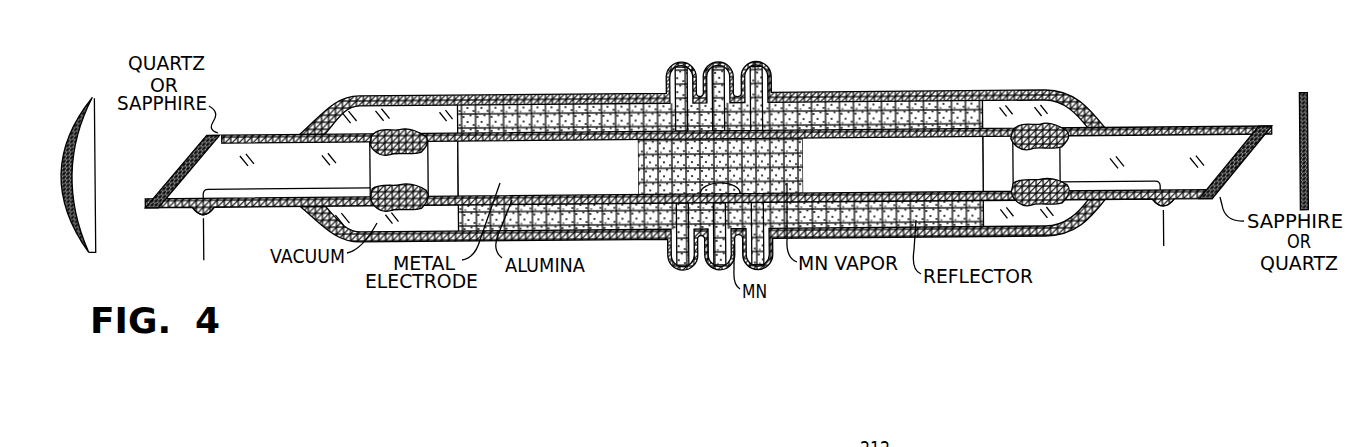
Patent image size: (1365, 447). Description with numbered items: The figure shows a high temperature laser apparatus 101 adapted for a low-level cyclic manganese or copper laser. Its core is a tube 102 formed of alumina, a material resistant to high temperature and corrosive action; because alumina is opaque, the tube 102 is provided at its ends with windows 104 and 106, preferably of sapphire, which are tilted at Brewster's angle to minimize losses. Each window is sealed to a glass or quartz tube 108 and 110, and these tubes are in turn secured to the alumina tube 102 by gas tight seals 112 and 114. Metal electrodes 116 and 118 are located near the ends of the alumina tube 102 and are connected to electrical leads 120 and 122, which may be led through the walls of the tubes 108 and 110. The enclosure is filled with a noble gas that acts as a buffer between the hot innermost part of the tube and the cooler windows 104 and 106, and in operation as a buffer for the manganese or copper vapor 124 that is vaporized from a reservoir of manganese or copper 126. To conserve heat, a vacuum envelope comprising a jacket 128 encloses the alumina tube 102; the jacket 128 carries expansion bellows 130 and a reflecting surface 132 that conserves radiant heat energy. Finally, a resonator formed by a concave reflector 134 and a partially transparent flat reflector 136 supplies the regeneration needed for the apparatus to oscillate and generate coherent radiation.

The laser apparatus 101 is at (976, 83).
The alumina tube 102 is at (608, 200).
The window 104 is at (180, 174).
The window 106 is at (1238, 160).
The glass or quartz tube 108 is at (287, 206).
The glass or quartz tube 110 is at (1121, 204).
The gas tight seal 112 is at (388, 132).
The gas tight seal 114 is at (1085, 112).
The metal electrode 116 is at (547, 176).
The metal electrode 118 is at (873, 175).
The electrical lead 120 is at (283, 187).
The electrical lead 122 is at (1137, 183).
The manganese vapor 124 is at (728, 175).
The reservoir of manganese 126 is at (702, 262).
The jacket 128 is at (879, 94).
The expansion bellows 130 is at (774, 78).
The reflecting surface 132 is at (538, 116).
The concave reflector 134 is at (88, 220).
The partially transparent flat reflector 136 is at (1298, 103).